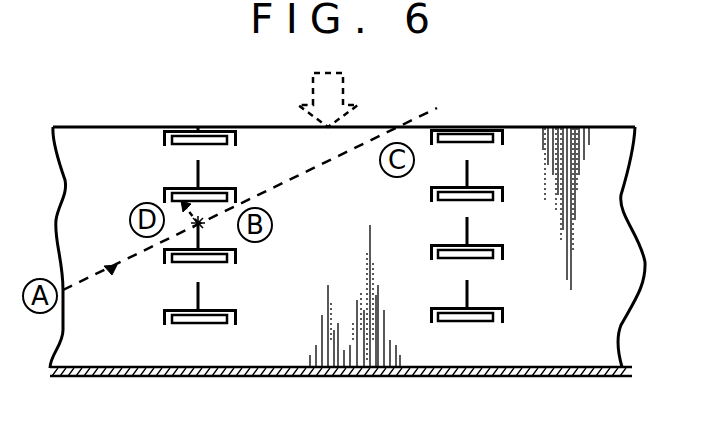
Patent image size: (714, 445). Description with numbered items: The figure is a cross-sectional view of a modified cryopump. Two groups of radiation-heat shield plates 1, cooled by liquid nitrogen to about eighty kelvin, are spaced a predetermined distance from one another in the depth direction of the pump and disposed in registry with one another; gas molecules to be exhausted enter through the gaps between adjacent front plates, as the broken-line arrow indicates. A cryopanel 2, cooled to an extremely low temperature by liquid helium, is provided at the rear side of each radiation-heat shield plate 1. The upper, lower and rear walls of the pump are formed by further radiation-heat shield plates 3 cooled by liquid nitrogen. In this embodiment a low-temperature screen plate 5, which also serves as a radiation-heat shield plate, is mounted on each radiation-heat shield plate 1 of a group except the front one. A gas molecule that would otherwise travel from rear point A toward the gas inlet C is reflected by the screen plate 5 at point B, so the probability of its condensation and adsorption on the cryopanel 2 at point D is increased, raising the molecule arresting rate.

The radiation-heat shield plate 1 is at (197, 127).
The cryopanel 2 is at (213, 187).
The radiation-heat shield plate 3 is at (606, 150).
The screen plate 5 is at (197, 165).